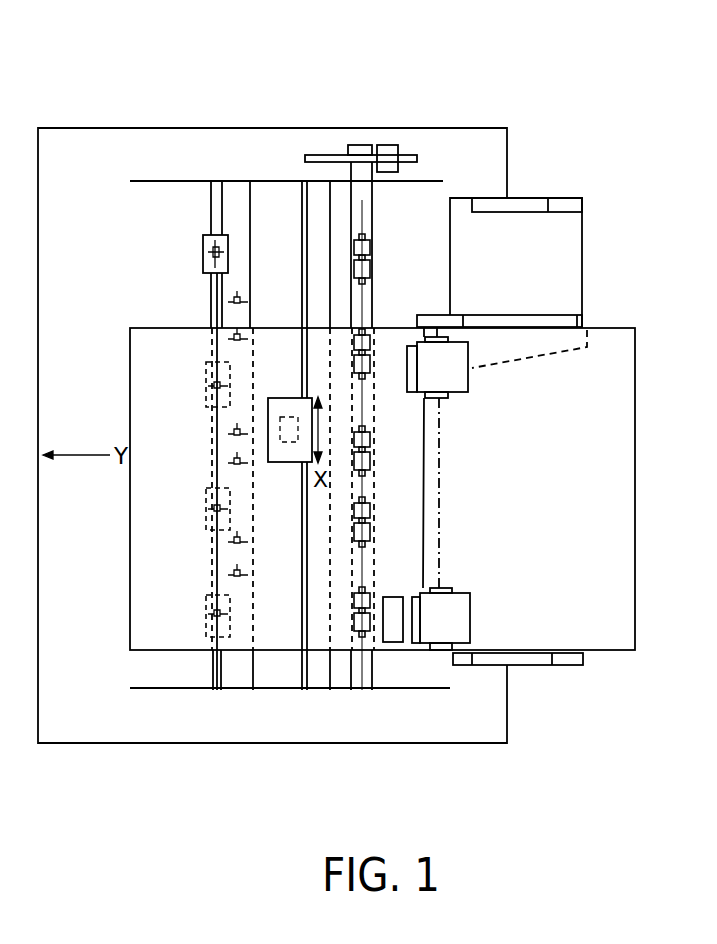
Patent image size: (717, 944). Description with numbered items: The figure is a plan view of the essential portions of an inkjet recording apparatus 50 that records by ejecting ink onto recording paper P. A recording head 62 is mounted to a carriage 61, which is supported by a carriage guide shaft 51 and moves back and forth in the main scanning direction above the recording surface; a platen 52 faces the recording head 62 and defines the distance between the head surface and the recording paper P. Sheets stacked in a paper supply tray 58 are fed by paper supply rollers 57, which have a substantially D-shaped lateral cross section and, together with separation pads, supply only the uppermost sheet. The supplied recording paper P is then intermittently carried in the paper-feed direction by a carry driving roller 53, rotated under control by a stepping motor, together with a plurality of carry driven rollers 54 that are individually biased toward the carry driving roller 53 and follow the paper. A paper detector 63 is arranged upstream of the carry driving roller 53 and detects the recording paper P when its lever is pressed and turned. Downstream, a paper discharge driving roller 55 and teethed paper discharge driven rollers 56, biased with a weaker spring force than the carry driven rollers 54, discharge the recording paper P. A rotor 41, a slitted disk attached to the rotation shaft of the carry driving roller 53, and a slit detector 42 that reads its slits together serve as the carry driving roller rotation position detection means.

The inkjet recording apparatus 50 is at (494, 124).
The rotor 41 is at (413, 154).
The slit detector 42 is at (387, 144).
The carriage guide shaft 51 is at (301, 196).
The platen 52 is at (250, 181).
The carry driving roller 53 is at (354, 181).
The carry driven rollers 54 is at (373, 245).
The paper discharge driving roller 55 is at (203, 243).
The paper discharge driven rollers 56 is at (223, 613).
The paper supply rollers 57 is at (470, 640).
The paper supply tray 58 is at (567, 290).
The carriage 61 is at (270, 398).
The recording head 62 is at (290, 462).
The paper detector 63 is at (398, 643).
The recording paper P is at (637, 418).